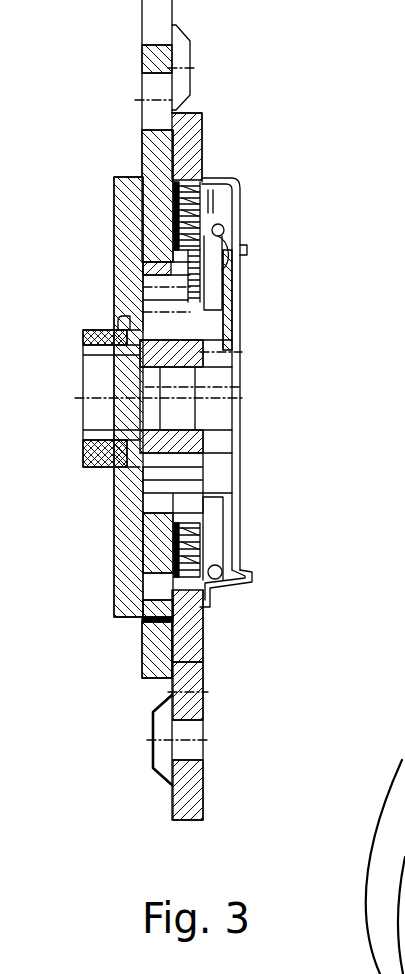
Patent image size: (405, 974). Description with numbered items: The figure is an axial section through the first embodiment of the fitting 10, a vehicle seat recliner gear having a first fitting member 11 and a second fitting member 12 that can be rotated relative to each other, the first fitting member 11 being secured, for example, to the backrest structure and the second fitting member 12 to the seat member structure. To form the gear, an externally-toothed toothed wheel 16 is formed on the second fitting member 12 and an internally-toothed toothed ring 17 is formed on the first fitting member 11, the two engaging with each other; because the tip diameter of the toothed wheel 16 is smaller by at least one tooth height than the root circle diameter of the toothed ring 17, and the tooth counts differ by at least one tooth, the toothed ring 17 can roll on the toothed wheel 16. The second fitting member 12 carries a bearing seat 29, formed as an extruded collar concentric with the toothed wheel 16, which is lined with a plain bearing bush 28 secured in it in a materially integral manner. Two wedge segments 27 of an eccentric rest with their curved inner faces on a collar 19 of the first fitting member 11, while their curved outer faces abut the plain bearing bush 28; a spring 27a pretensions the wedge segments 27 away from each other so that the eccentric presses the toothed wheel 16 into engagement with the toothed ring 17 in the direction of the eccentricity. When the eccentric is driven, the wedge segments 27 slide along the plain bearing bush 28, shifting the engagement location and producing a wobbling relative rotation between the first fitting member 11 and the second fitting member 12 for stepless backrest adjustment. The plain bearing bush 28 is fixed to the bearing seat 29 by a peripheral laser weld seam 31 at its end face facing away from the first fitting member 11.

The fitting 10 is at (320, 206).
The first fitting member 11 is at (146, 58).
The second fitting member 12 is at (192, 147).
The toothed wheel 16 is at (158, 196).
The toothed ring 17 is at (152, 152).
The collar 19 is at (82, 360).
The wedge segments 27 is at (158, 276).
The spring 27a is at (224, 231).
The plain bearing bush 28 is at (200, 268).
The bearing seat 29 is at (238, 214).
The laser weld seam 31 is at (203, 512).